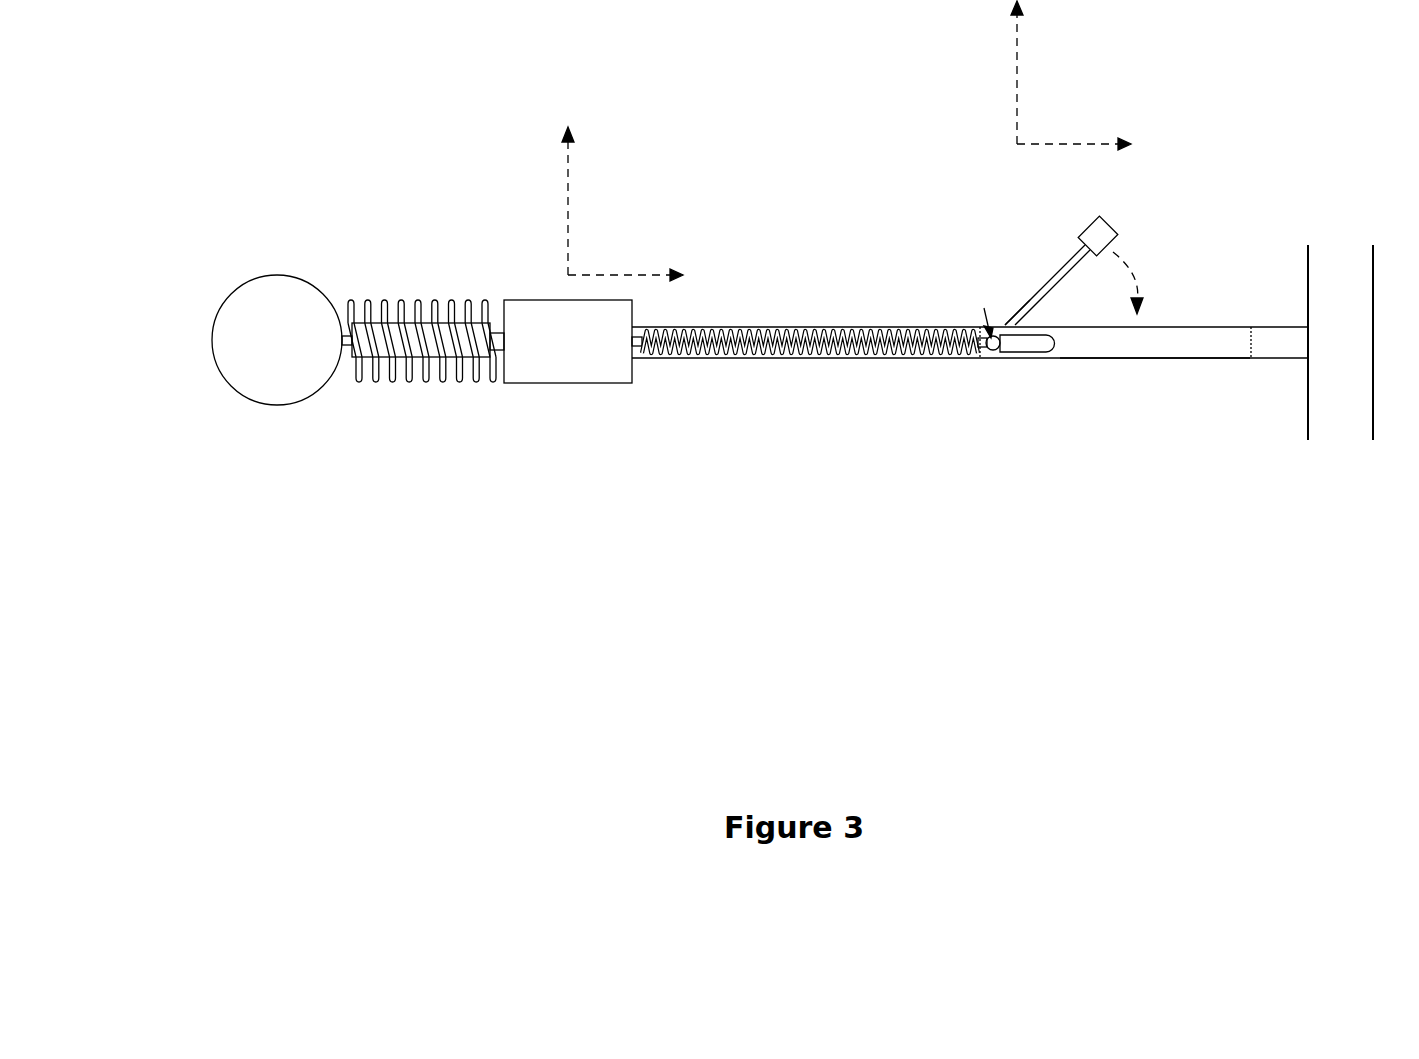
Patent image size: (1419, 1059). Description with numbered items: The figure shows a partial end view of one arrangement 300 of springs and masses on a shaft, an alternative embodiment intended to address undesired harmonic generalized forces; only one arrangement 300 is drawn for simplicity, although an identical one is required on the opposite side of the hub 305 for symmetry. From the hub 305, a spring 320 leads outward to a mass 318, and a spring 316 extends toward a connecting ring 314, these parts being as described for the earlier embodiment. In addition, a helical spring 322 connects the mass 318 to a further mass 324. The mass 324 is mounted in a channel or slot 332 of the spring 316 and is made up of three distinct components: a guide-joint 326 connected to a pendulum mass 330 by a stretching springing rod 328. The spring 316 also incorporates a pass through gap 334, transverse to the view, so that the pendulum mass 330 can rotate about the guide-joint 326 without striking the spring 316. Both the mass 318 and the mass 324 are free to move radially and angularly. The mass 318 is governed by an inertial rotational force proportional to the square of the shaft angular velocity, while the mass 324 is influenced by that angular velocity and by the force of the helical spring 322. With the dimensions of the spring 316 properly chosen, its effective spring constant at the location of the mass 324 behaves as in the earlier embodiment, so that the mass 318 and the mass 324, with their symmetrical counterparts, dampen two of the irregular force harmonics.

The arrangement 300 is at (778, 771).
The hub 305 is at (277, 340).
The connecting ring 314 is at (1340, 342).
The spring 316 is at (1207, 360).
The mass 318 is at (568, 341).
The spring 320 is at (360, 383).
The helical spring 322 is at (768, 360).
The mass 324 is at (1053, 260).
The guide-joint 326 is at (997, 352).
The stretching springing rod 328 is at (1030, 297).
The pendulum mass 330 is at (1101, 212).
The channel (slot) 332 is at (1057, 345).
The pass through gap 334 is at (1112, 368).